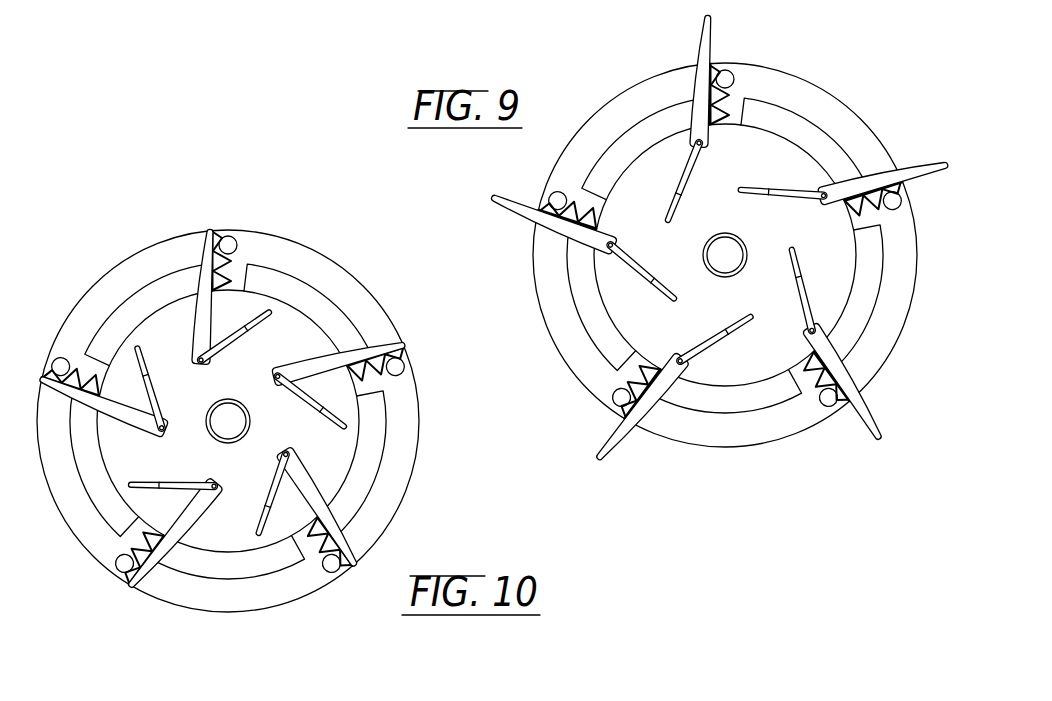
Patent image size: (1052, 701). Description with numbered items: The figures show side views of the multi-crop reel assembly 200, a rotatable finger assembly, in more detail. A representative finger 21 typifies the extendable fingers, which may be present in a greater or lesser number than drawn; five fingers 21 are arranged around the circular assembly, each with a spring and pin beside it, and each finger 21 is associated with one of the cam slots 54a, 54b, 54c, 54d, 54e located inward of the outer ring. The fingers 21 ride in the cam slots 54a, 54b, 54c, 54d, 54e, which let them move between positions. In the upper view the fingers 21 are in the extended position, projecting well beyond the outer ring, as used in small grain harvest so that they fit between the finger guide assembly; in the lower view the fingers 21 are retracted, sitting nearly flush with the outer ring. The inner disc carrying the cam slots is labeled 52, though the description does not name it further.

In FIG. 10, the multi-crop reel assembly 200 is at (288, 236).
In FIG. 9, the multi-crop reel assembly 200 is at (815, 76).
In FIG. 10, the finger 21 is at (207, 230).
In FIG. 9, the finger 21 is at (711, 30).
In FIG. 10, the disc 52 is at (337, 458).
In FIG. 9, the disc 52 is at (748, 362).
In FIG. 10, the cam slot 54a is at (247, 331).
In FIG. 9, the cam slot 54a is at (694, 160).
In FIG. 10, the cam slot 54b is at (330, 410).
In FIG. 9, the cam slot 54b is at (793, 193).
In FIG. 10, the cam slot 54c is at (284, 480).
In FIG. 9, the cam slot 54c is at (803, 291).
In FIG. 10, the cam slot 54d is at (185, 487).
In FIG. 9, the cam slot 54d is at (728, 332).
In FIG. 10, the cam slot 54e is at (155, 393).
In FIG. 9, the cam slot 54e is at (639, 268).